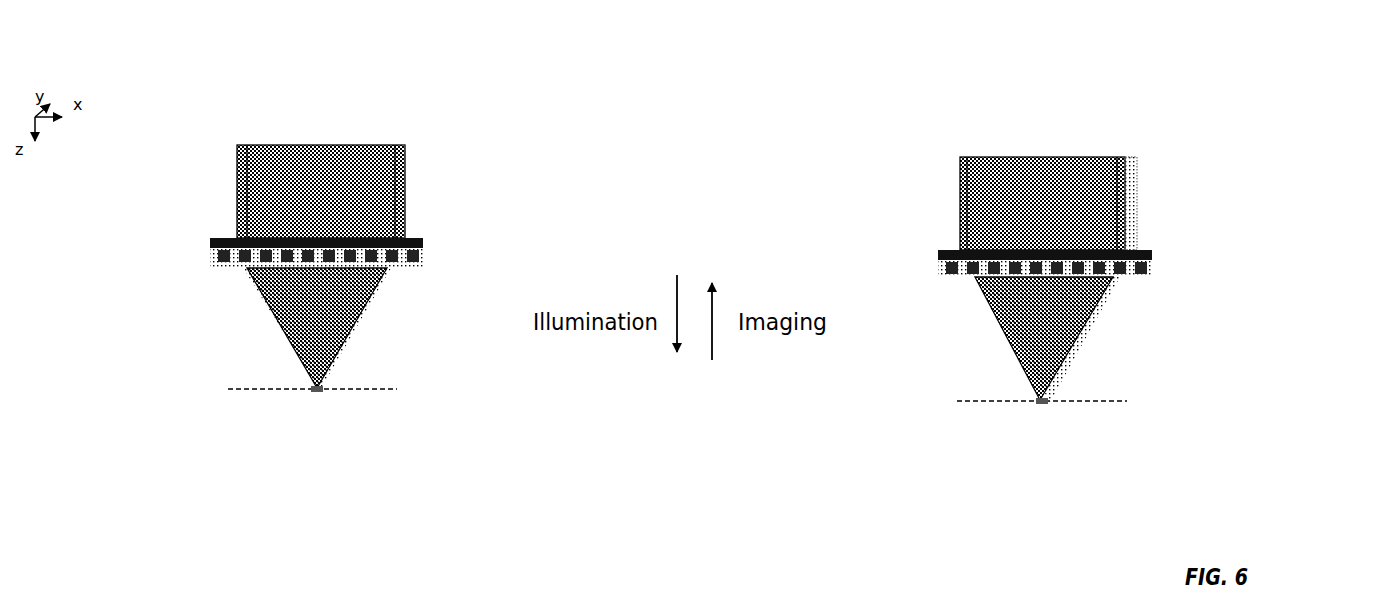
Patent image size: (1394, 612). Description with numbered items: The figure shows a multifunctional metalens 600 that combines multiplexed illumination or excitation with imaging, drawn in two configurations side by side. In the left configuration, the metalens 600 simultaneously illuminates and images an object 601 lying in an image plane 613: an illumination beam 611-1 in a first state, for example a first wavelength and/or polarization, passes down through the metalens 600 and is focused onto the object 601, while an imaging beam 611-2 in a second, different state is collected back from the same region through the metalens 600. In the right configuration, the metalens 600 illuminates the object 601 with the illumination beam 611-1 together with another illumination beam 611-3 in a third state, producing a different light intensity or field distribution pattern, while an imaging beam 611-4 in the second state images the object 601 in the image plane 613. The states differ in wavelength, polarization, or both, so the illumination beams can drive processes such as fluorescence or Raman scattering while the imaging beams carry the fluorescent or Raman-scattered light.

The illumination beam 611-1 is at (960, 173).
The imaging beam 611-2 is at (480, 107).
The illumination beam 611-3 is at (1125, 157).
The imaging beam 611-4 is at (1238, 145).
The multifunctional metalens 600 is at (424, 230).
The image plane 613 is at (973, 402).
The object 601 is at (325, 394).